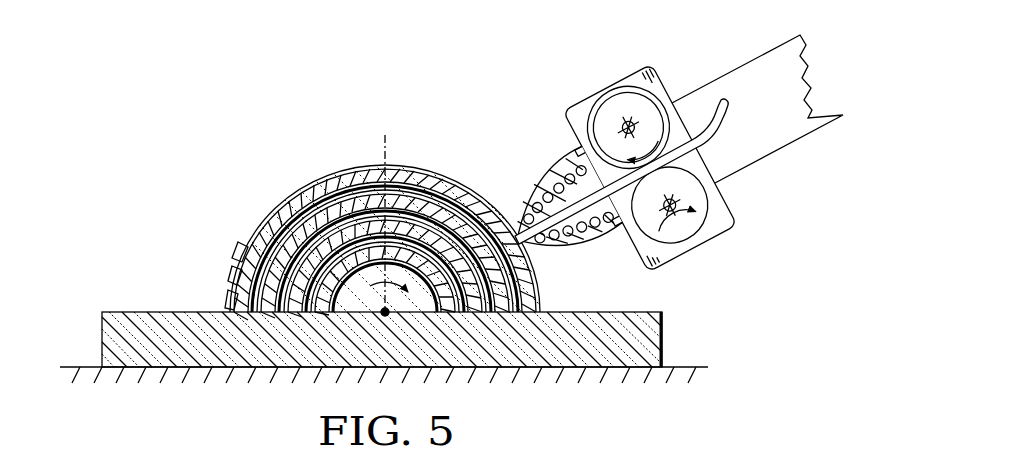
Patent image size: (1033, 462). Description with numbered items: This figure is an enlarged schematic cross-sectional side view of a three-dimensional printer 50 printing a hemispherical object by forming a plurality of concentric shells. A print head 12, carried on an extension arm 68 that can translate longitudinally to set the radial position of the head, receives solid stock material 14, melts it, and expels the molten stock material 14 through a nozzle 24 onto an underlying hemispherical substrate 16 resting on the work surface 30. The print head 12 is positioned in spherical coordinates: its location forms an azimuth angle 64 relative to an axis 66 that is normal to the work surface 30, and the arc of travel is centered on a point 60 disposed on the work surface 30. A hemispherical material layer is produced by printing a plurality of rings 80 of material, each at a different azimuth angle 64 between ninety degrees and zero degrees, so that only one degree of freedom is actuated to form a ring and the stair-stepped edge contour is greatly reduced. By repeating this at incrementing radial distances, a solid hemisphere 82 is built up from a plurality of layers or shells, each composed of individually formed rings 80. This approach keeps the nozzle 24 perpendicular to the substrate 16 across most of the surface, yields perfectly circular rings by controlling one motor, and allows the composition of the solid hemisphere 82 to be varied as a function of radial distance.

The 3D printer 50 is at (214, 76).
The print head 12 is at (606, 86).
The stock material 14 is at (725, 128).
The substrate 16 is at (278, 198).
The nozzle 24 is at (557, 176).
The work surface 30 is at (140, 311).
The point 60 is at (388, 316).
The azimuth angle 64 is at (322, 306).
The axis 66 is at (385, 145).
The extension arm 68 is at (735, 70).
The rings 80 is at (240, 248).
The solid hemisphere 82 is at (317, 170).